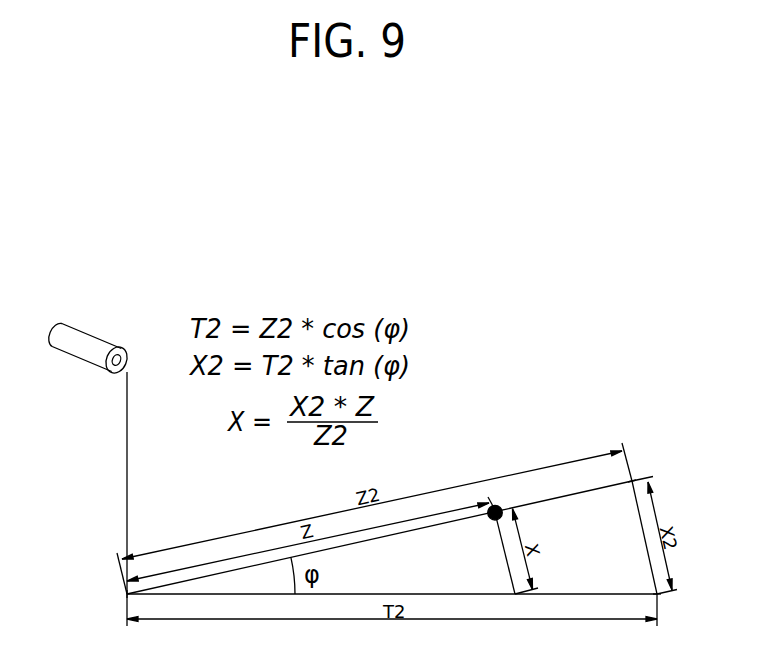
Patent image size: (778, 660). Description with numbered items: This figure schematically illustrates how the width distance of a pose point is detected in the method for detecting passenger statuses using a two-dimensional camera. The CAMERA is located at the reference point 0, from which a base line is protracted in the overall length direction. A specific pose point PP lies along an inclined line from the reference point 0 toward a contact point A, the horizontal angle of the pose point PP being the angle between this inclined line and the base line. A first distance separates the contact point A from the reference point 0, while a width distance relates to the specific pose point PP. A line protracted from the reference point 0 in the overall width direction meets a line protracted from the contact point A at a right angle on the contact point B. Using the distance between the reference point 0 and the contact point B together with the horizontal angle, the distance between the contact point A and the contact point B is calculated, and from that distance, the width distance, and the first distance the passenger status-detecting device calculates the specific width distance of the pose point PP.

The specific pose point PP is at (494, 506).
The 2D camera CAMERA is at (86, 328).
The reference point 0 is at (117, 606).
The contact point A is at (639, 467).
The contact point B is at (665, 609).